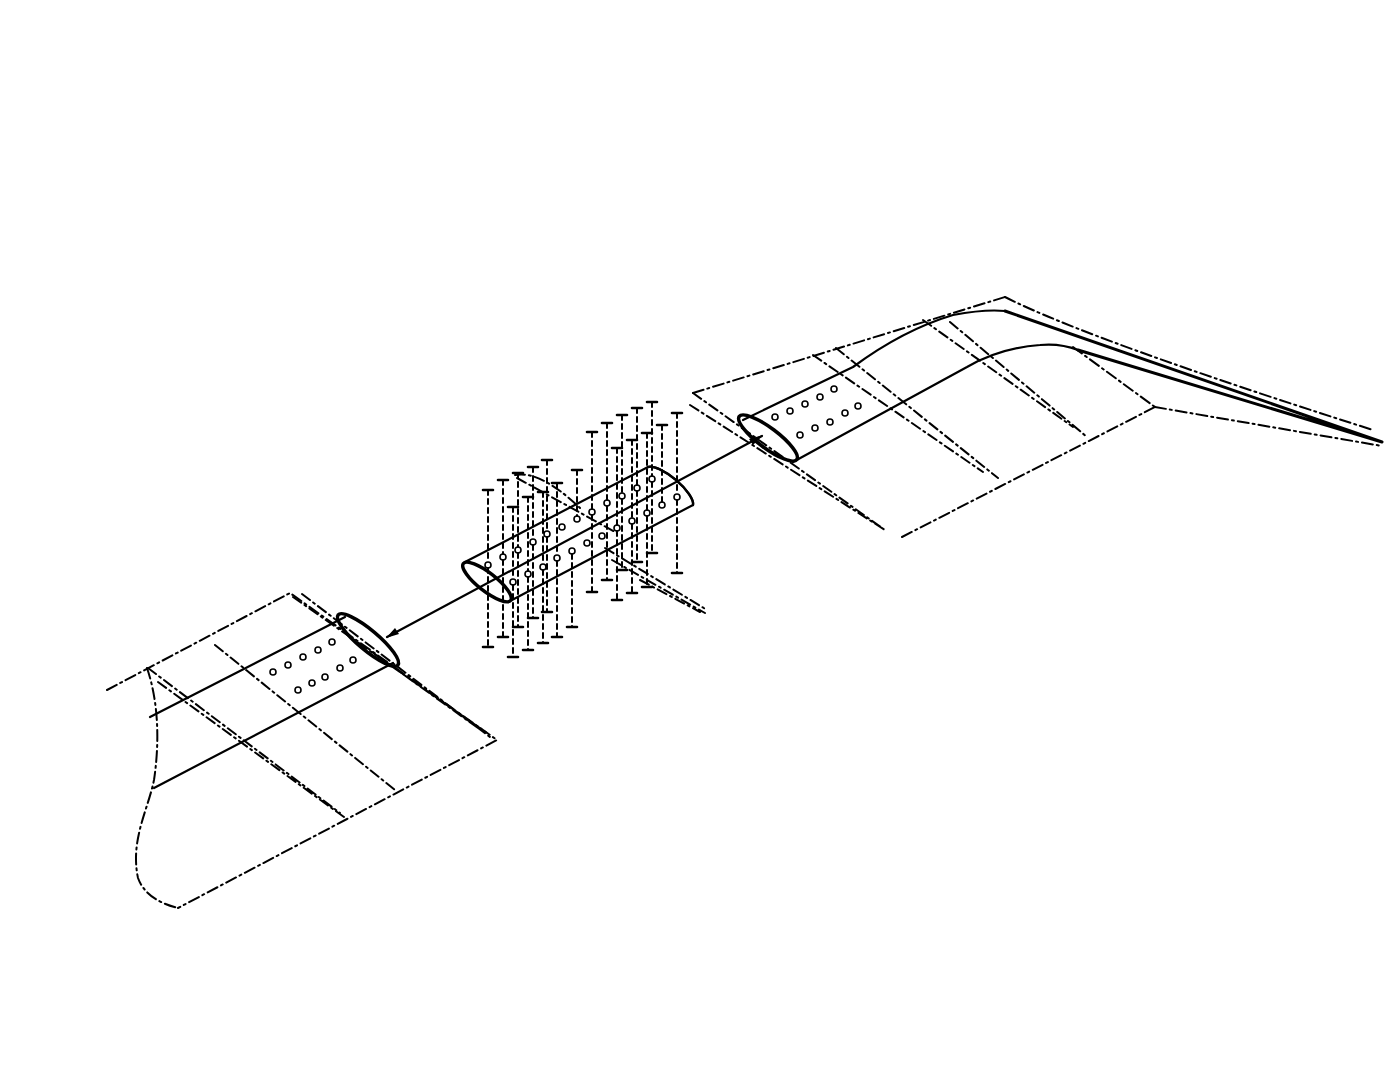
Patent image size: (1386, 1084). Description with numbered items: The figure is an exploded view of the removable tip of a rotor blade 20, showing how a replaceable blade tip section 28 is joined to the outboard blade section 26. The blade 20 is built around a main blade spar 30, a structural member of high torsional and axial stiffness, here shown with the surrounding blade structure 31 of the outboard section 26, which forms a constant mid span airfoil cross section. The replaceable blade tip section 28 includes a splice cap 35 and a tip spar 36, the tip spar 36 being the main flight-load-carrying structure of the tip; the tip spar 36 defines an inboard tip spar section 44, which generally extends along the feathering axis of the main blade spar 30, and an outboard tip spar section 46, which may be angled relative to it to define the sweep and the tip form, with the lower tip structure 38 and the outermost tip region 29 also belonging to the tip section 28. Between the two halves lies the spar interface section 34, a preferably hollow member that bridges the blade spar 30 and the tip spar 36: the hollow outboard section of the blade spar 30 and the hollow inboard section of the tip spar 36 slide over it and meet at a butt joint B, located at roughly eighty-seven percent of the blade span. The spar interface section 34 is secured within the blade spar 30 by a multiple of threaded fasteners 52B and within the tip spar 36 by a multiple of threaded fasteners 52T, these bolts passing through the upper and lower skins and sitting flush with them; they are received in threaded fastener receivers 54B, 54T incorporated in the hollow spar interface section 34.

The blade 20 is at (449, 322).
The outboard blade section 26 is at (260, 644).
The replaceable blade tip section 28 is at (1035, 166).
The wing tip 29 is at (1385, 385).
The main blade spar 30 is at (153, 711).
The lower surface 31 is at (446, 742).
The spar interface section 34 is at (568, 441).
The splice cap 35 is at (1032, 305).
The tip spar 36 is at (878, 346).
The lower skin 38 is at (917, 493).
The inboard tip spar section 44 is at (747, 398).
The outboard tip spar section 46 is at (967, 303).
The threaded fasteners 52T is at (631, 397).
The threaded fasteners 52B is at (628, 633).
The threaded fastener receivers 54T is at (686, 505).
The threaded fastener receivers 54B is at (487, 583).
The butt joint B is at (690, 596).